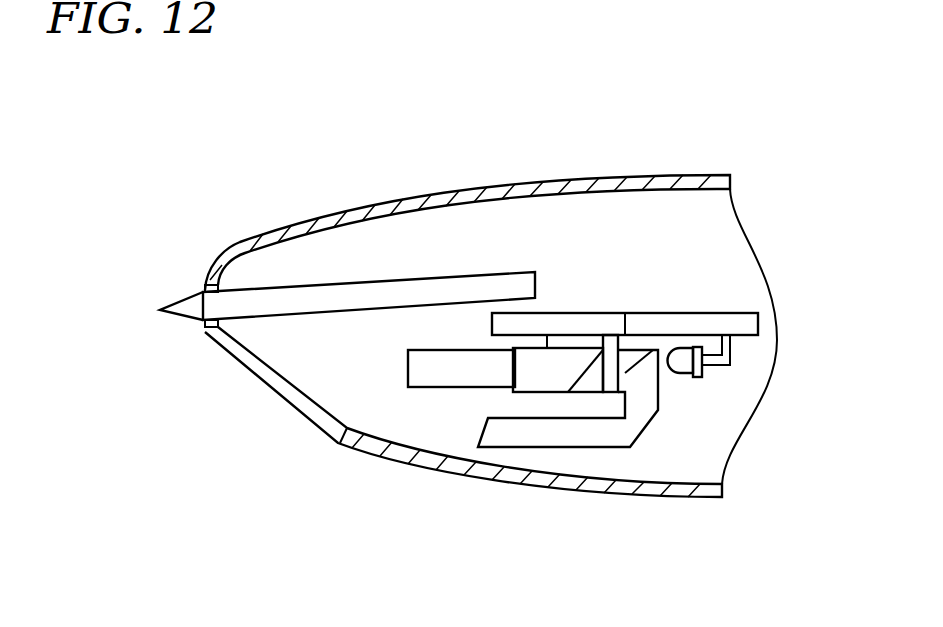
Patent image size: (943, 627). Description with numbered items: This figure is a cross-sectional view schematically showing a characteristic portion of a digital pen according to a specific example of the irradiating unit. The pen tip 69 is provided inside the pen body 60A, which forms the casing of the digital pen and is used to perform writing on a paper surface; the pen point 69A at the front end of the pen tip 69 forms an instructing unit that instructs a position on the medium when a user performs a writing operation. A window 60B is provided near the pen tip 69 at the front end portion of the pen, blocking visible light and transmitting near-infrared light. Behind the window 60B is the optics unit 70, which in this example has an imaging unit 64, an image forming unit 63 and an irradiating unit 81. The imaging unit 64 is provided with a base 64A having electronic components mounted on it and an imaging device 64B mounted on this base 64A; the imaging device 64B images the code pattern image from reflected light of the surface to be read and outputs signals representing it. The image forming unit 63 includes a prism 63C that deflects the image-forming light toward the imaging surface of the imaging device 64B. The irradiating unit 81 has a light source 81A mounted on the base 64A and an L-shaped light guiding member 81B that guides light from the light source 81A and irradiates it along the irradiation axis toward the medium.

The pen body 60A is at (417, 195).
The window 60B is at (277, 378).
The pen tip 69 is at (303, 287).
The pen point 69A is at (160, 310).
The imaging unit 64 is at (740, 132).
The base 64A is at (668, 327).
The imaging device 64B is at (598, 345).
The optics unit 70 is at (714, 305).
The image forming unit 63 is at (423, 378).
The prism 63C is at (532, 377).
The irradiating unit 81 is at (540, 538).
The light source 81A is at (685, 362).
The light guiding member 81B is at (573, 432).